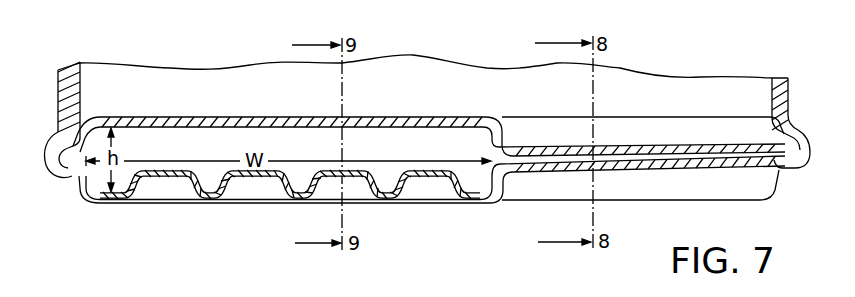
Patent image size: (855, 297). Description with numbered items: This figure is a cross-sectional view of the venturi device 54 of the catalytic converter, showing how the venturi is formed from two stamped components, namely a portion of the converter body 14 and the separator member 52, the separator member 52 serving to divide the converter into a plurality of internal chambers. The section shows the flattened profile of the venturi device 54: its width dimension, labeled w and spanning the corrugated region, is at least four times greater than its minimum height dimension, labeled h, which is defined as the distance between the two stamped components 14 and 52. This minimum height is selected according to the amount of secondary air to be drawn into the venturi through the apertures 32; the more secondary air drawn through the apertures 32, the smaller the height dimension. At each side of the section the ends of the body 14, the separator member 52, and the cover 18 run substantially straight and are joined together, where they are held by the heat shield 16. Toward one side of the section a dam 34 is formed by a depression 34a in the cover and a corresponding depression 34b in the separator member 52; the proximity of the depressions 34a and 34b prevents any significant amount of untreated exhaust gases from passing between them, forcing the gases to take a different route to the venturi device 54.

The converter body 14 is at (84, 180).
The heat shield 16 is at (45, 152).
The cover 18 is at (81, 82).
The apertures 32 is at (165, 178).
The dam 34 is at (670, 182).
The depression in cover 34a is at (558, 173).
The depression in separator member 34b is at (505, 145).
The separator member 52 is at (137, 127).
The venturi device 54 is at (248, 110).